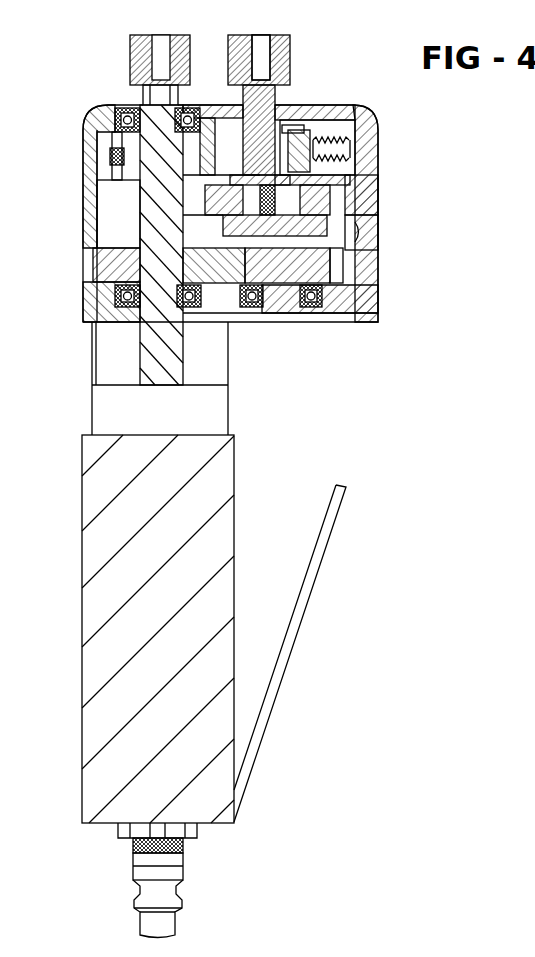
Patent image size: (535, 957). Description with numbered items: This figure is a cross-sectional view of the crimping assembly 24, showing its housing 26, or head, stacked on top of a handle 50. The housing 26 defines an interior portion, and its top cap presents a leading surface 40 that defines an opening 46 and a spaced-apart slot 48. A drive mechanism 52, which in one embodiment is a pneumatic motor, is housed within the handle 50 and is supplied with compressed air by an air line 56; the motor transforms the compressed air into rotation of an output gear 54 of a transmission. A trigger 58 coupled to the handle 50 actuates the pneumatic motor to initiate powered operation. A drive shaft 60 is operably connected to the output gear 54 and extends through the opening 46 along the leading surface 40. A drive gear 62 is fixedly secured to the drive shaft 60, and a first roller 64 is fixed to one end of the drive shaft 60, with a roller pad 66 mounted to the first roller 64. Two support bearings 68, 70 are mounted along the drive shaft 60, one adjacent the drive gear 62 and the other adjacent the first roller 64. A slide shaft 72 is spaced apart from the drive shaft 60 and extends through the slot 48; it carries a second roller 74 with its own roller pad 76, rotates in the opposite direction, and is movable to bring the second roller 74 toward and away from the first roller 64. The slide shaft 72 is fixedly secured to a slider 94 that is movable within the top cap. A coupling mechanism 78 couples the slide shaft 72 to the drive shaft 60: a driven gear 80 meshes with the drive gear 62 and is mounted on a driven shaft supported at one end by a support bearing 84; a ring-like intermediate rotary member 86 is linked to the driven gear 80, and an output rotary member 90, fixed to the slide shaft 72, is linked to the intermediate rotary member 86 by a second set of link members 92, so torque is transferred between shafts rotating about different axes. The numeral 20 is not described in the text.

The valve chamber 20 is at (368, 212).
The crimping assembly 24 is at (80, 98).
The housing 26 is at (383, 138).
The leading surface 40 is at (213, 107).
The opening 46 is at (142, 101).
The slot 48 is at (303, 103).
The handle 50 is at (82, 503).
The drive mechanism 52 is at (90, 688).
The output gear 54 is at (92, 410).
The air line 56 is at (157, 880).
The trigger 58 is at (328, 547).
The drive shaft 60 is at (143, 232).
The drive gear 62 is at (85, 265).
The first roller 64 is at (137, 88).
The roller pad 66 is at (132, 43).
The support bearing 68 is at (103, 330).
The support bearing 70 is at (112, 110).
The slide shaft 72 is at (290, 100).
The second roller 74 is at (230, 85).
The roller pad 76 is at (292, 43).
The coupling mechanism 78 is at (368, 198).
The driven gear 80 is at (327, 265).
The support bearing 84 is at (320, 305).
The intermediate rotary member 86 is at (327, 225).
The output rotary member 90 is at (212, 182).
The second set of link members 92 is at (222, 228).
The slider 94 is at (117, 140).